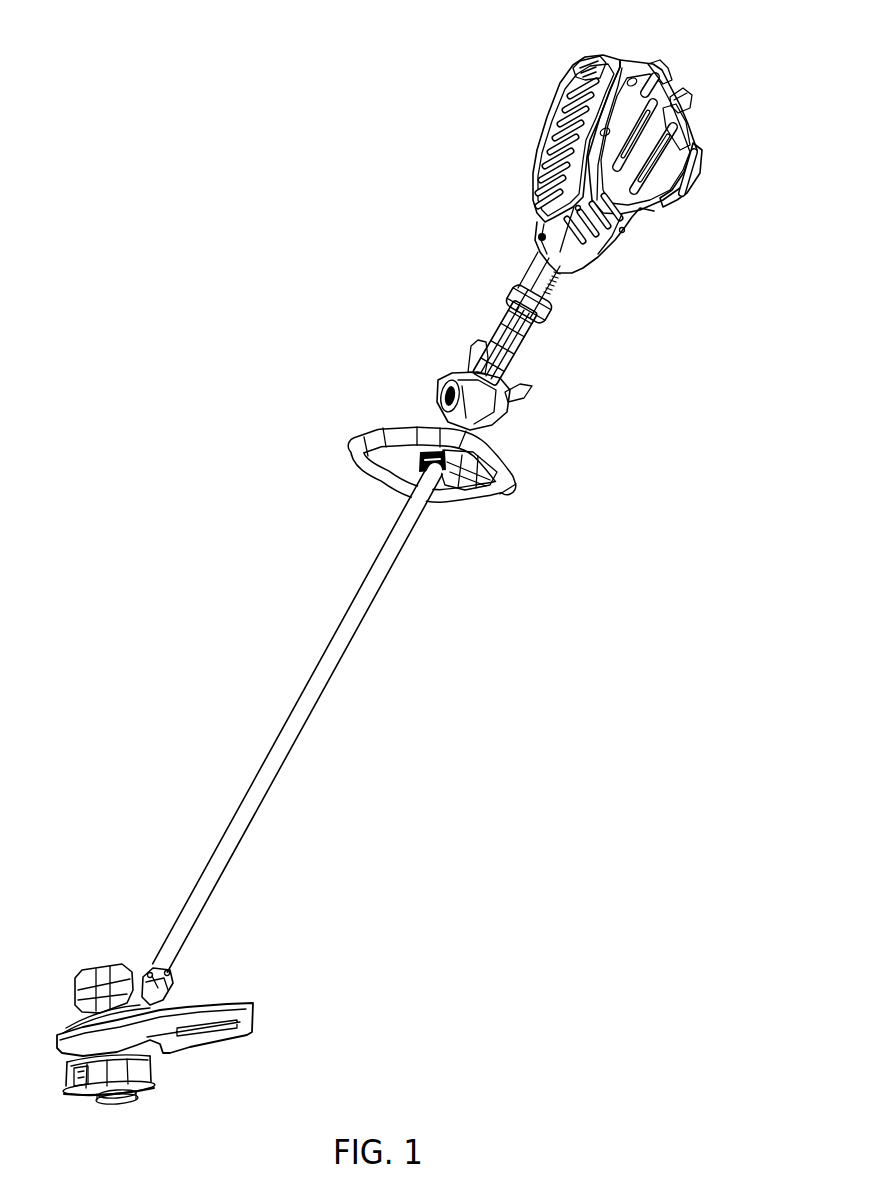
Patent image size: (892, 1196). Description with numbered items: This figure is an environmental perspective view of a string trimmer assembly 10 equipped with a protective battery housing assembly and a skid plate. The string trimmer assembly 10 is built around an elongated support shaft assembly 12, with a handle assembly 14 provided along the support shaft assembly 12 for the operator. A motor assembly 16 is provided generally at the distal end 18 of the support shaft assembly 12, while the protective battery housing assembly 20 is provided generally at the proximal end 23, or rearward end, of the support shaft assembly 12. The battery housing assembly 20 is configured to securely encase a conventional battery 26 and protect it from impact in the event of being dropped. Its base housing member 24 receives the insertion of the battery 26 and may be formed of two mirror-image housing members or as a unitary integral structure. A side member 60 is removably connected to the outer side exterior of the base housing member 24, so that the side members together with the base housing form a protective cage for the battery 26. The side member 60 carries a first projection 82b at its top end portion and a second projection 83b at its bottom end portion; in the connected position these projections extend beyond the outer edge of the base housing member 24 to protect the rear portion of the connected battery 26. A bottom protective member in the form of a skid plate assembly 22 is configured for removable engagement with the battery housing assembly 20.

The string trimmer assembly 10 is at (318, 560).
The elongated support shaft assembly 12 is at (323, 673).
The handle assembly 14 is at (498, 446).
The motor assembly 16 is at (112, 962).
The distal end 18 is at (170, 968).
The protective battery housing assembly 20 is at (530, 112).
The skid plate assembly 22 is at (694, 164).
The proximal end 23 is at (533, 264).
The base housing member 24 is at (630, 226).
The battery 26 is at (624, 60).
The side member 60 is at (672, 116).
The first projection 82b is at (661, 64).
The second projection 83b is at (690, 90).